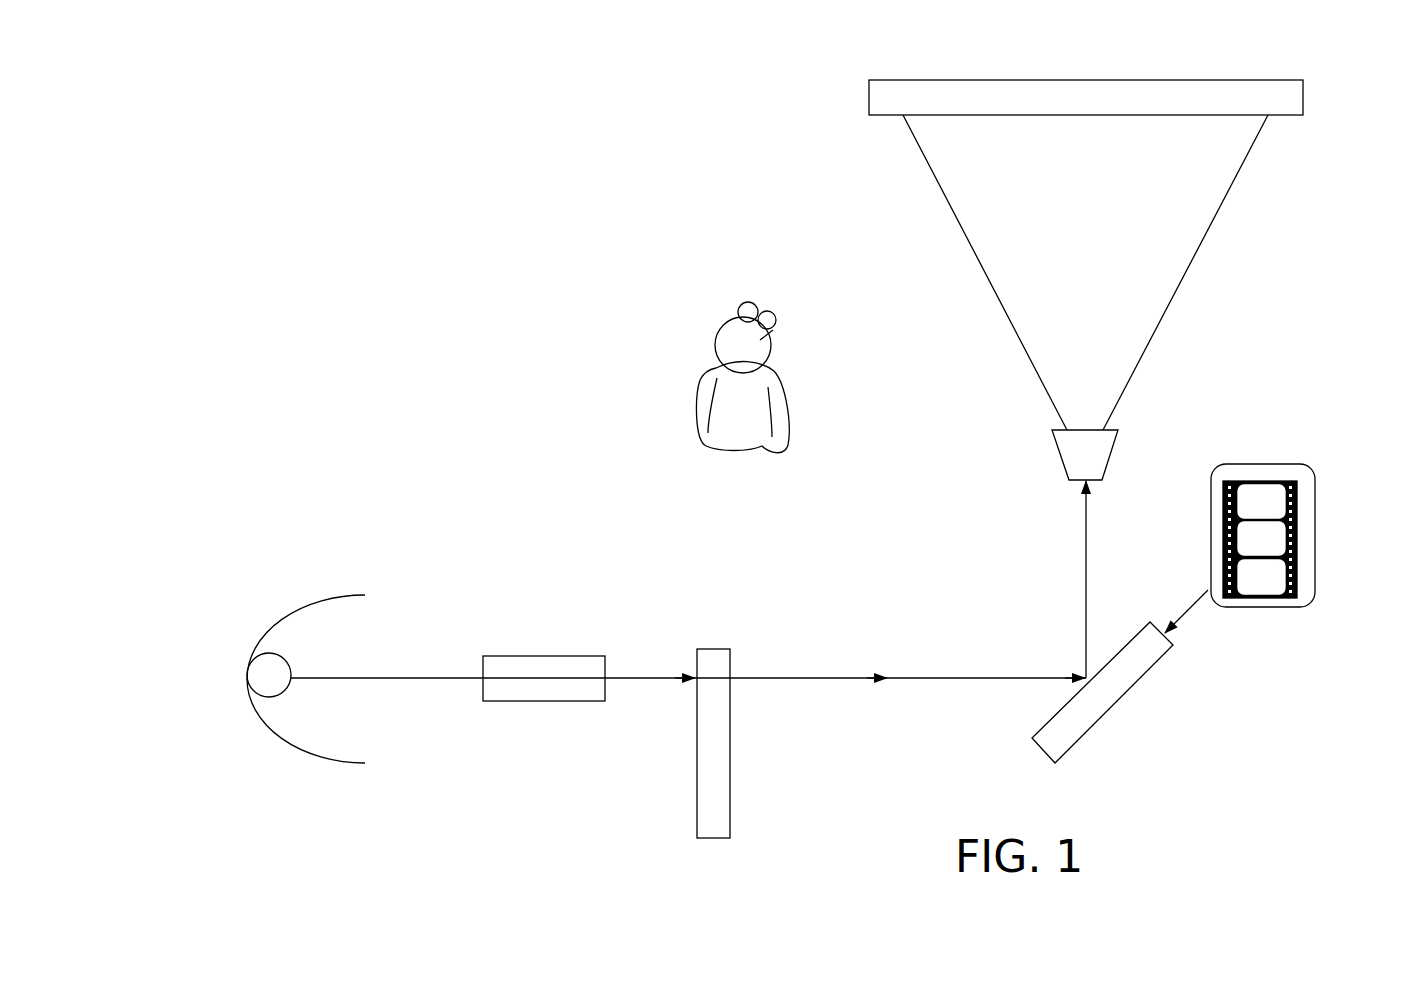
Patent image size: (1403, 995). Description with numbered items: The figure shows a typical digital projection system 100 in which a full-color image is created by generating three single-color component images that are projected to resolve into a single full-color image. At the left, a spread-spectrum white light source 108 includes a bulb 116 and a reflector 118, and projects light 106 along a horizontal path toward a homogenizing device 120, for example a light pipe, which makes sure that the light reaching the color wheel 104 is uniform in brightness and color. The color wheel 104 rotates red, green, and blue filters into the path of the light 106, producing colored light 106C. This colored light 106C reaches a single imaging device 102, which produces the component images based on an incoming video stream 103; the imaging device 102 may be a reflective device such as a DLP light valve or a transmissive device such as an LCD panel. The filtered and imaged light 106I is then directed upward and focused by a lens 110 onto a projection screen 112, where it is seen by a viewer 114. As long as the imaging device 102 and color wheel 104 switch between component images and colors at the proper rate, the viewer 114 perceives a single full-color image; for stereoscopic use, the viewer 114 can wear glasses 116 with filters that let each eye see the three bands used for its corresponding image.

The projection system 100 is at (438, 212).
The imaging device 102 is at (1123, 715).
The video stream 103 is at (1313, 565).
The color wheel 104 is at (733, 778).
The light 106 is at (416, 675).
The colored light 106C is at (823, 672).
The filtered and imaged light 106I is at (1083, 588).
The light source 108 is at (258, 612).
The lens 110 is at (1122, 462).
The projection screen 112 is at (1188, 79).
The viewer 114 is at (742, 400).
The bulb 116 is at (740, 297).
The reflector 118 is at (360, 592).
The homogenizing device 120 is at (522, 713).